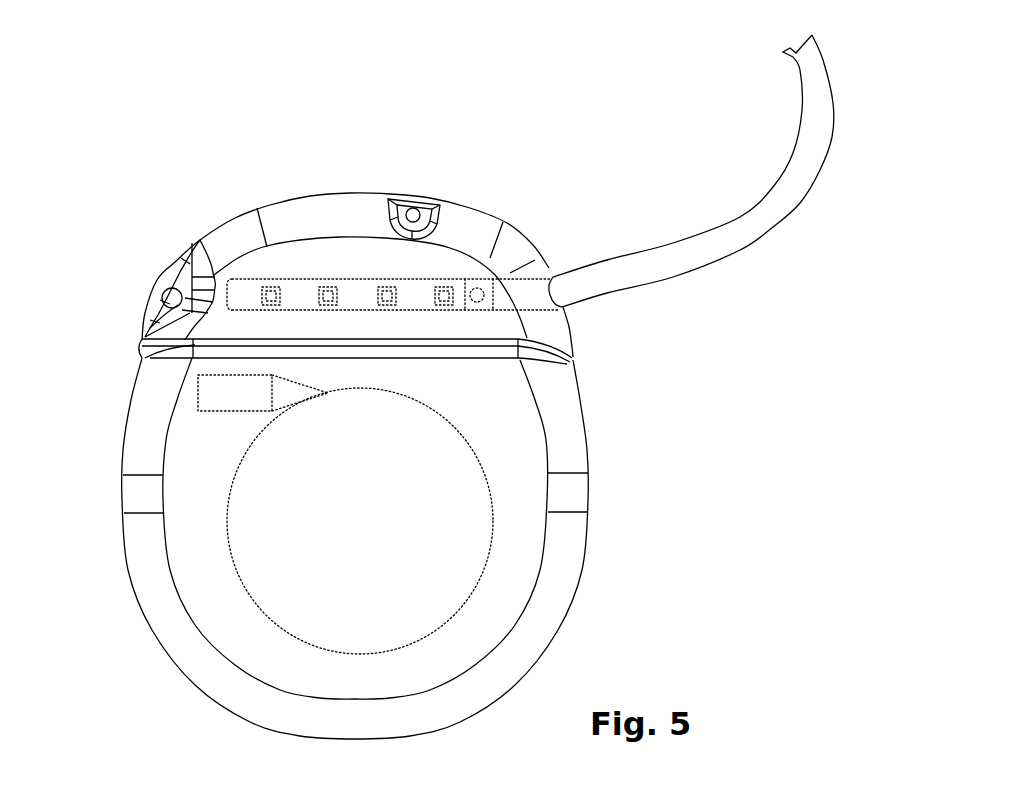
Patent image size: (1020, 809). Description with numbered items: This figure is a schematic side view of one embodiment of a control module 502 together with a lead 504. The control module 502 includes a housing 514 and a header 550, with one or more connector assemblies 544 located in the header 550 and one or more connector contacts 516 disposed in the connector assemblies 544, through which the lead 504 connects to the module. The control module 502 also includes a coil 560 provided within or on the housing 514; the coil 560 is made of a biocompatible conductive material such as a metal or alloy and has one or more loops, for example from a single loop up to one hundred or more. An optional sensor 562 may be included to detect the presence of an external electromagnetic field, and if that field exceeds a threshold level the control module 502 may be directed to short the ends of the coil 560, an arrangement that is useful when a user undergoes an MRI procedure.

The control module 502 is at (118, 222).
The lead 504 is at (672, 257).
The housing 514 is at (578, 411).
The connector contacts 516 is at (267, 288).
The connector assemblies 544 is at (448, 272).
The header 550 is at (335, 205).
The coil 560 is at (493, 545).
The sensor 562 is at (198, 393).